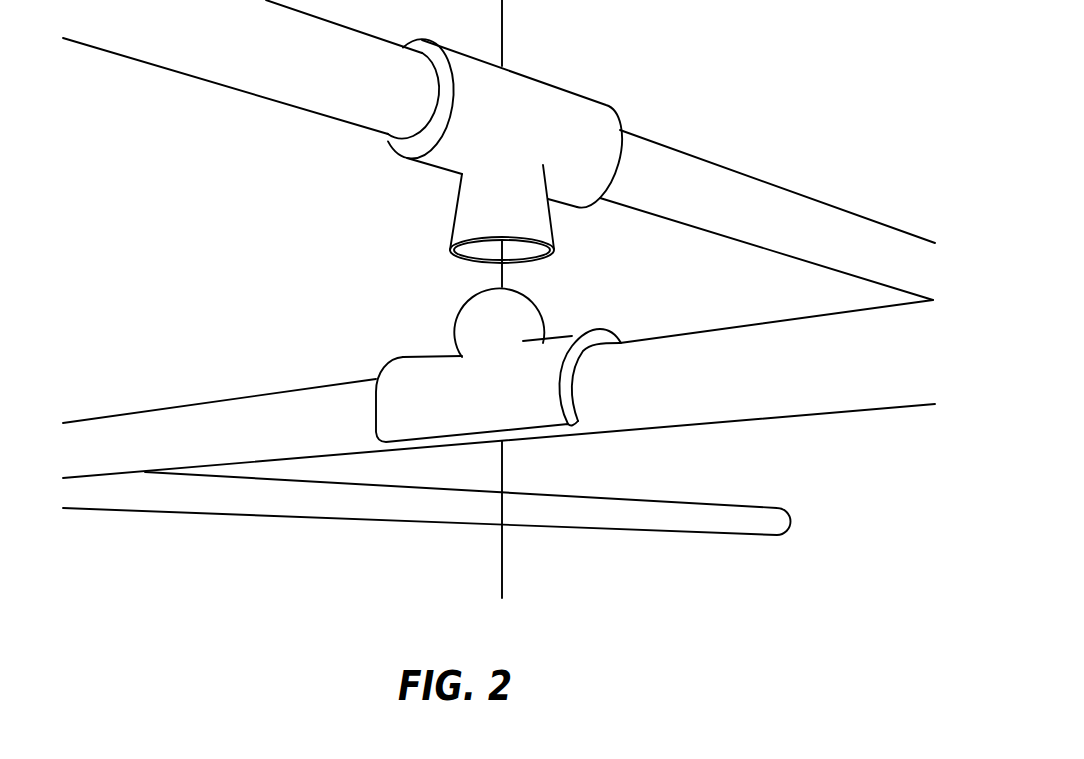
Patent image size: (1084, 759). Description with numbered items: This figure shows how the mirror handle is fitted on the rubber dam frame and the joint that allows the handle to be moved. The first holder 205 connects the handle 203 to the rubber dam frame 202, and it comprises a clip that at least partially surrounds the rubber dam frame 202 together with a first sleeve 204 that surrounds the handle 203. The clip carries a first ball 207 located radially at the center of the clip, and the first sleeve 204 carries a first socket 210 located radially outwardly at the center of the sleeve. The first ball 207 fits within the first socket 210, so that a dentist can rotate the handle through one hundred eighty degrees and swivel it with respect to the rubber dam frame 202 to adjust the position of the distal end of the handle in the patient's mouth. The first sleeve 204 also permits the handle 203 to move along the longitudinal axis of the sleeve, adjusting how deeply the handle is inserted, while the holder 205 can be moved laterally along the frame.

The rubber dam frame 202 is at (218, 416).
The handle 203 is at (783, 200).
The first sleeve 204 is at (540, 97).
The first holder 205 is at (412, 377).
The first ball 207 is at (518, 305).
The first socket 210 is at (474, 210).